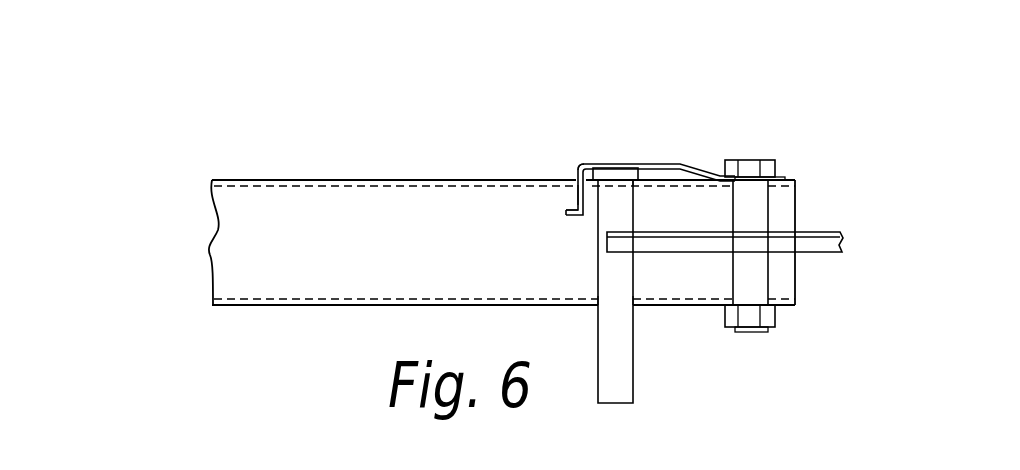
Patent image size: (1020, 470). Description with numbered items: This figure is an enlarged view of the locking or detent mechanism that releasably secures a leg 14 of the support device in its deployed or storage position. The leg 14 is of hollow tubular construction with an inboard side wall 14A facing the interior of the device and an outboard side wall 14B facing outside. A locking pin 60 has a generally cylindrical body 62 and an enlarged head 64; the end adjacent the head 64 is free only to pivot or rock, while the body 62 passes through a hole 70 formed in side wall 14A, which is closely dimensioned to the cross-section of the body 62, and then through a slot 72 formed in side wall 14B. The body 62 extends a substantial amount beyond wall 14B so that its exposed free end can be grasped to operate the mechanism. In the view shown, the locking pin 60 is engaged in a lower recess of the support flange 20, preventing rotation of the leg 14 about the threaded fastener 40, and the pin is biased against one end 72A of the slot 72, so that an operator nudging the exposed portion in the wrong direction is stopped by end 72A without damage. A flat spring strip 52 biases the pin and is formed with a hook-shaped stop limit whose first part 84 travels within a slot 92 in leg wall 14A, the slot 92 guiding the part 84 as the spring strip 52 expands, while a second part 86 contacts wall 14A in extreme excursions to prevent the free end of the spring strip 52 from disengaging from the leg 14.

The leg 14 is at (446, 217).
The side wall 14A is at (262, 180).
The side wall 14B is at (283, 305).
The support flange 20 is at (815, 248).
The threaded fastener 40 is at (742, 160).
The spring strip 52 is at (603, 167).
The locking pin 60 is at (632, 315).
The body 62 is at (632, 315).
The head 64 is at (618, 168).
The hole 70 is at (633, 182).
The slot 72 is at (584, 300).
The end of slot 72A is at (673, 306).
The first part of stop limit 84 is at (574, 194).
The second part of stop limit 86 is at (570, 220).
The slot 92 is at (572, 170).